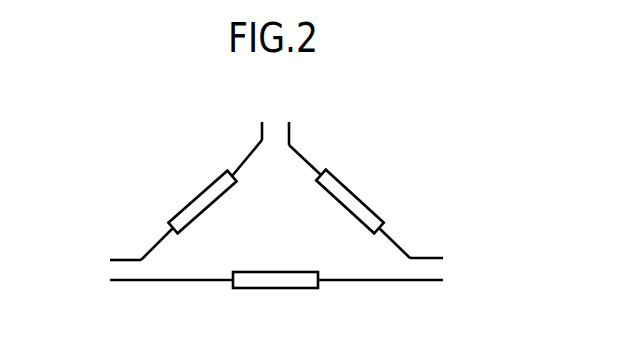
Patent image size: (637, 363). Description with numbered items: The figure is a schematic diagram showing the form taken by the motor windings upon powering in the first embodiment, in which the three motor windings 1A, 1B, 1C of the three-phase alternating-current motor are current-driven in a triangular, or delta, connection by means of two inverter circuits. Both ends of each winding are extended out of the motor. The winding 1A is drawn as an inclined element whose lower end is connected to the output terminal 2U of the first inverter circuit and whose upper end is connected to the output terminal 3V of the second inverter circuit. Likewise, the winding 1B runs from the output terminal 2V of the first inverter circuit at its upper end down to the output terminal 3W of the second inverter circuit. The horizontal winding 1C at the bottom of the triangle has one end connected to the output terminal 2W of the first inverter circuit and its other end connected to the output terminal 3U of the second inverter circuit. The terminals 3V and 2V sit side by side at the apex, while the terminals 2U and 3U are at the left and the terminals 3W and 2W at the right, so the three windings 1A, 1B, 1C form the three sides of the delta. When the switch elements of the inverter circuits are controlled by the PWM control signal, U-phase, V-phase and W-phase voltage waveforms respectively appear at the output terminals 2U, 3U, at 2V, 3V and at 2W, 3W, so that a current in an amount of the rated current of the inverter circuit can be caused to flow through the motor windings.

The motor winding 1A is at (201, 200).
The motor winding 1B is at (349, 201).
The motor winding 1C is at (275, 264).
The output terminal 2U is at (106, 257).
The output terminal 3U is at (152, 284).
The output terminal 3V is at (255, 118).
The output terminal 2V is at (292, 120).
The output terminal 3W is at (444, 255).
The output terminal 2W is at (398, 284).